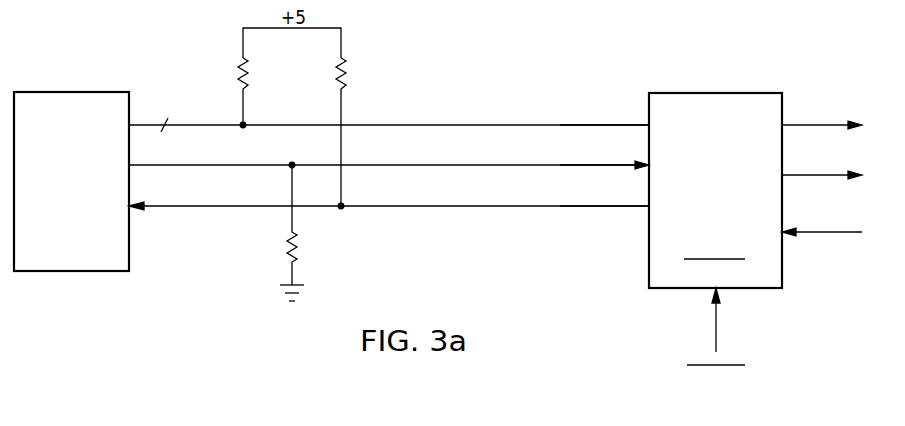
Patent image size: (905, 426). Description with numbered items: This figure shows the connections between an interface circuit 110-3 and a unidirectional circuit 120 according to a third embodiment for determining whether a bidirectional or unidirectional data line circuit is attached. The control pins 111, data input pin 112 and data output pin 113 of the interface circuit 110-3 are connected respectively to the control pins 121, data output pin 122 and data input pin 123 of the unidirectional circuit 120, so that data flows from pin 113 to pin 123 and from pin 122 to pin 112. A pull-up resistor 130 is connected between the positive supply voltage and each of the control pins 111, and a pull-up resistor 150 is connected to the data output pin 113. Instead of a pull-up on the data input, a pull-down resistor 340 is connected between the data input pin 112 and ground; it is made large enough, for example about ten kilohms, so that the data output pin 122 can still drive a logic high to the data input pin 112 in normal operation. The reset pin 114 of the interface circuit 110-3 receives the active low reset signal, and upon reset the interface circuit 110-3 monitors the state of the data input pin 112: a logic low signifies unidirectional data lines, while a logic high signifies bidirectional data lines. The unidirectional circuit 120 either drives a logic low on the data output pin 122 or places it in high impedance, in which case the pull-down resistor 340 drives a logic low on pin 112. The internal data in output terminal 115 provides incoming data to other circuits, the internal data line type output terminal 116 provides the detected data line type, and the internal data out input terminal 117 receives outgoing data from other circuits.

The unidirectional circuit 120 is at (86, 92).
The interface circuit 110-3 is at (724, 93).
The control pins 121 is at (202, 123).
The data output pin 122 is at (202, 163).
The data input pin 123 is at (202, 203).
The pull-up resistor 130 is at (238, 68).
The pull-up resistor 150 is at (348, 70).
The pull-down resistor 340 is at (298, 247).
The control pins 111 is at (593, 123).
The data input pin 112 is at (593, 164).
The data output pin 113 is at (593, 205).
The reset pin 114 is at (716, 313).
The internal data in output terminal 115 is at (815, 123).
The internal data line type output terminal 116 is at (815, 173).
The internal data out input terminal 117 is at (815, 230).